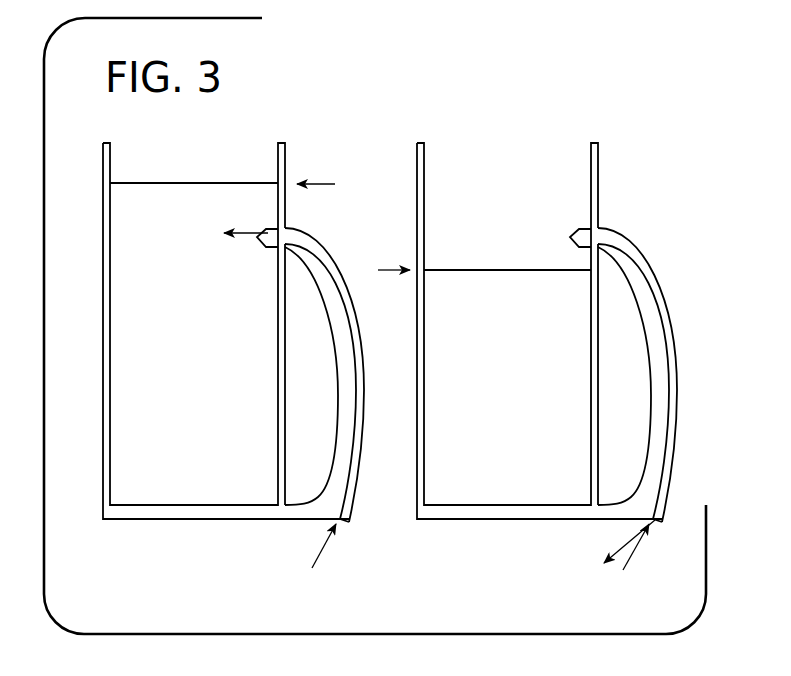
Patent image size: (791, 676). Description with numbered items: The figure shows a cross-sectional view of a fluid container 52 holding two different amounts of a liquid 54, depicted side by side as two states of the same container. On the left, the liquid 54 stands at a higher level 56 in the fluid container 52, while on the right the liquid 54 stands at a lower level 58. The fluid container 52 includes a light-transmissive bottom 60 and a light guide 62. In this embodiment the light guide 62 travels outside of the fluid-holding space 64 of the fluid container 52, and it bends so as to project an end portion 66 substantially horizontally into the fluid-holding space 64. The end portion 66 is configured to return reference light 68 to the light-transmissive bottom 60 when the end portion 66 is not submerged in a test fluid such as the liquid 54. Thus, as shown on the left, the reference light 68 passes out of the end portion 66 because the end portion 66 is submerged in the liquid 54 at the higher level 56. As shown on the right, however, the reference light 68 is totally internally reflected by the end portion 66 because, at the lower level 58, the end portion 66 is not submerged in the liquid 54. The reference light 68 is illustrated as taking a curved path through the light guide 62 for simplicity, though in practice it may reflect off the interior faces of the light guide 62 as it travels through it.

The fluid container 52 is at (104, 140).
The liquid 54 is at (152, 181).
The higher level 56 is at (330, 183).
The lower level 58 is at (381, 269).
The light-transmissive bottom 60 is at (344, 525).
The light guide 62 is at (337, 383).
The fluid-holding space 64 is at (228, 143).
The end portion 66 is at (266, 248).
The reference light 68 is at (317, 571).